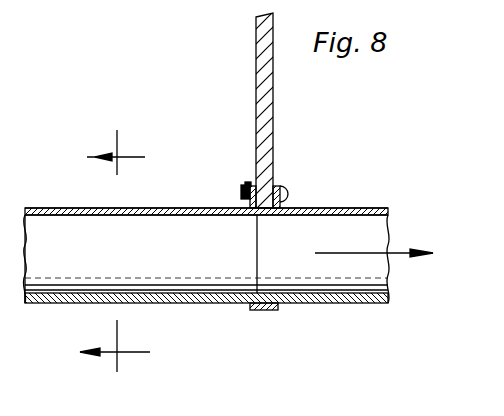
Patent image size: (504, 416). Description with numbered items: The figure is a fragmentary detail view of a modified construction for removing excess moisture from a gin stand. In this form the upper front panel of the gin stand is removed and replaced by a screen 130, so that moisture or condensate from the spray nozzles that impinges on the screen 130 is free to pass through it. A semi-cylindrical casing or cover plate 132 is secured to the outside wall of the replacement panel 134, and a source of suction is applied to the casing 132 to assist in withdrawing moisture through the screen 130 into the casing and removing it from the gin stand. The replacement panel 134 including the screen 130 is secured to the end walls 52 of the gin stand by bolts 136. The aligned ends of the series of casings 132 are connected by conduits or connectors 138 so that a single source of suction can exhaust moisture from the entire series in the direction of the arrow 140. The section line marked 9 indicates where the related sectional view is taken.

The end walls 52 is at (270, 106).
The screen 130 is at (105, 207).
The semi-cylindrical casing or cover plate 132 is at (177, 300).
The replacement panel 134 is at (222, 207).
The bolts 136 is at (284, 195).
The conduits or connectors 138 is at (343, 207).
The arrow 140 is at (372, 252).
The section line 9- 9 is at (100, 251).